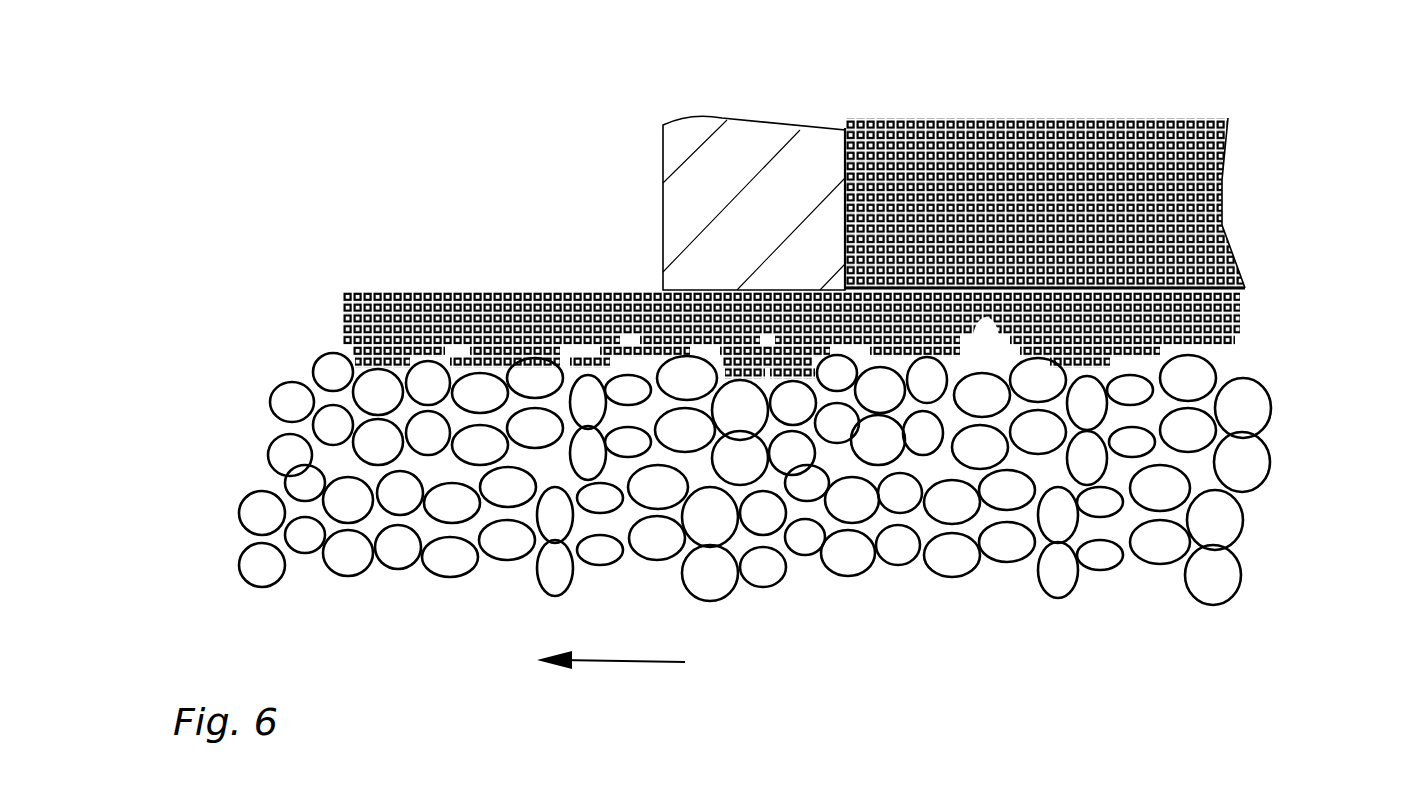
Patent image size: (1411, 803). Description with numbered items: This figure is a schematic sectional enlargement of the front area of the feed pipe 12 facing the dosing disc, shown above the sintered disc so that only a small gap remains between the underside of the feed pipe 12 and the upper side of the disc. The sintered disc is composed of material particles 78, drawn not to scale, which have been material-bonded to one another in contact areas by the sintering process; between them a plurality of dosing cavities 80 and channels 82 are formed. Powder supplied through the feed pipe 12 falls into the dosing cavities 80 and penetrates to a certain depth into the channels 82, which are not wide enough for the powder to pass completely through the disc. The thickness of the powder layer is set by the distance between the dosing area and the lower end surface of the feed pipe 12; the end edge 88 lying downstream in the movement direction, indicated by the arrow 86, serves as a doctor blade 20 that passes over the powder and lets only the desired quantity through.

The feed pipe 12 is at (762, 133).
The doctor blade 20 is at (703, 290).
The material particles 78 is at (288, 402).
The dosing cavities 80 is at (983, 320).
The channels 82 is at (1200, 468).
The matrix material 86 is at (1180, 205).
The end edge 88 is at (843, 228).